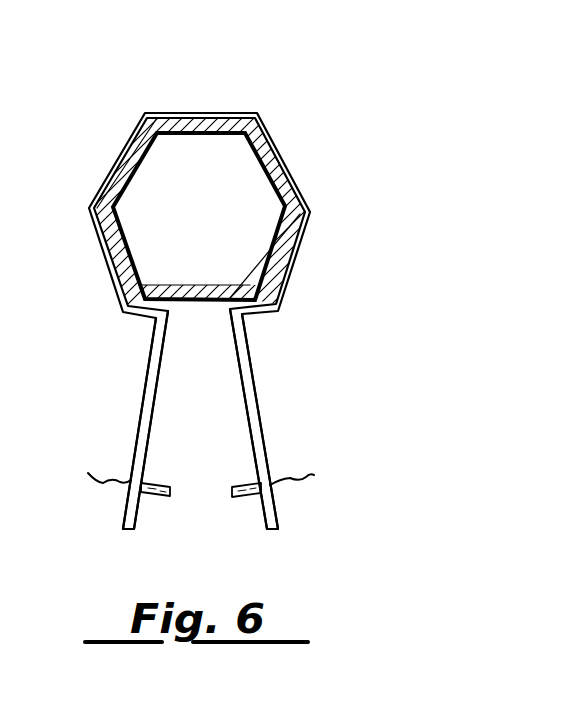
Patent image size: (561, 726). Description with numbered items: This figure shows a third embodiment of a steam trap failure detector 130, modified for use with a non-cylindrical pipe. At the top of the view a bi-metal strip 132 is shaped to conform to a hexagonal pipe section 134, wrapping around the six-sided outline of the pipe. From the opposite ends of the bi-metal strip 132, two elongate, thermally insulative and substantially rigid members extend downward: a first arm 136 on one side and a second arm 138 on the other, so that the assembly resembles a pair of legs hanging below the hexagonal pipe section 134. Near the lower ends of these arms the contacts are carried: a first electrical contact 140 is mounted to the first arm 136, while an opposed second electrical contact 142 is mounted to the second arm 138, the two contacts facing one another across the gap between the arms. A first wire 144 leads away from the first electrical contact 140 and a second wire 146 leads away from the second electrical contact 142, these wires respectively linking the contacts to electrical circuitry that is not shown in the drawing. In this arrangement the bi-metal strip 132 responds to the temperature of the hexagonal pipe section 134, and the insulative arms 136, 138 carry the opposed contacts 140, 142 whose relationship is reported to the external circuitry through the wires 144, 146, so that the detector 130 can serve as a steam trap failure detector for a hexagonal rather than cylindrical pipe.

The steam trap failure detector 130 is at (206, 299).
The bi-metal strip 132 is at (295, 270).
The hexagonal pipe section 134 is at (202, 125).
The first arm 136 is at (147, 393).
The second arm 138 is at (257, 393).
The first electrical contact 140 is at (155, 485).
The second electrical contact 142 is at (245, 497).
The first wire 144 is at (103, 482).
The second wire 146 is at (302, 482).